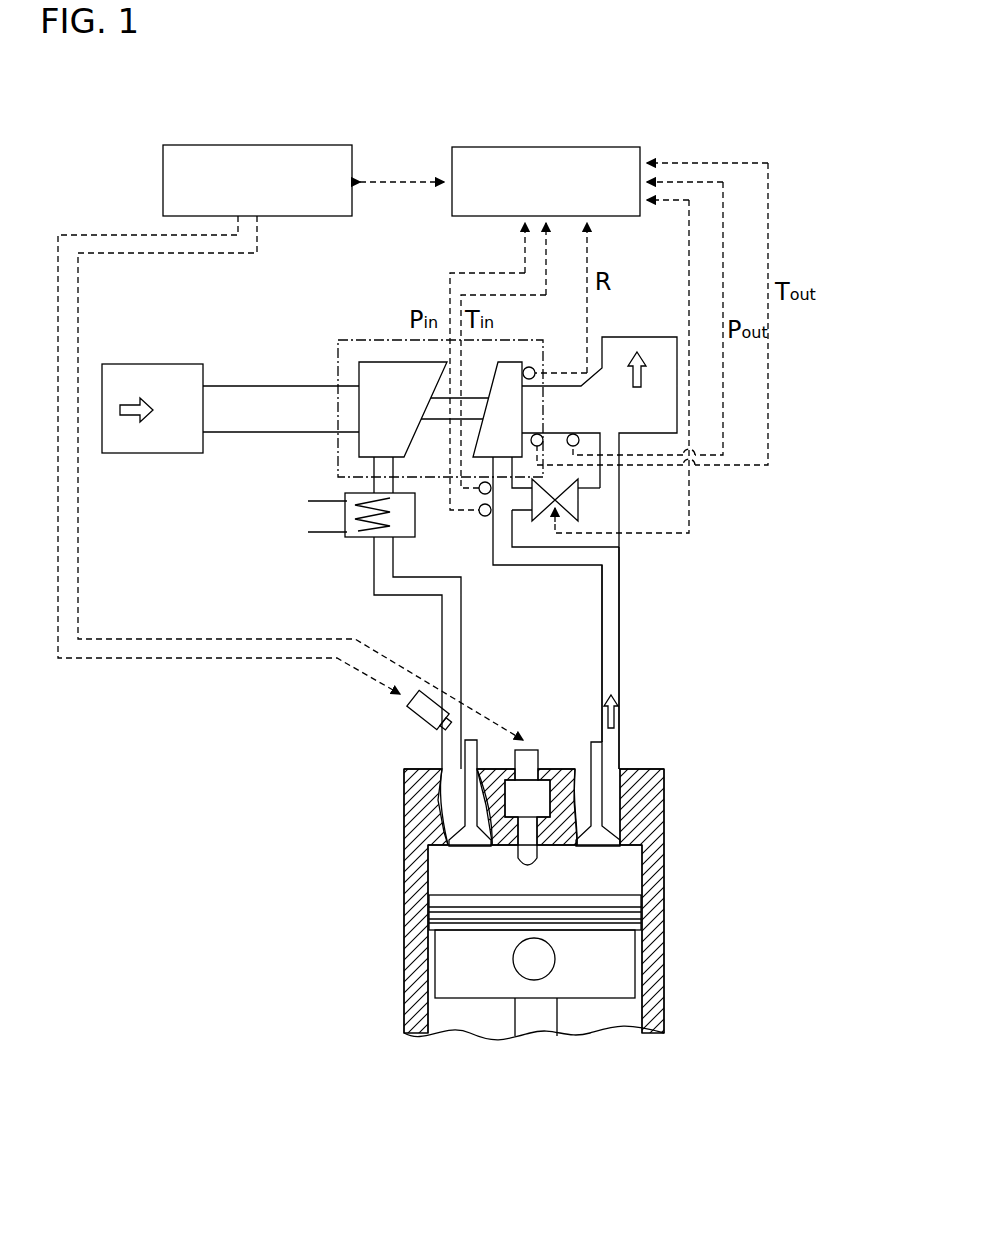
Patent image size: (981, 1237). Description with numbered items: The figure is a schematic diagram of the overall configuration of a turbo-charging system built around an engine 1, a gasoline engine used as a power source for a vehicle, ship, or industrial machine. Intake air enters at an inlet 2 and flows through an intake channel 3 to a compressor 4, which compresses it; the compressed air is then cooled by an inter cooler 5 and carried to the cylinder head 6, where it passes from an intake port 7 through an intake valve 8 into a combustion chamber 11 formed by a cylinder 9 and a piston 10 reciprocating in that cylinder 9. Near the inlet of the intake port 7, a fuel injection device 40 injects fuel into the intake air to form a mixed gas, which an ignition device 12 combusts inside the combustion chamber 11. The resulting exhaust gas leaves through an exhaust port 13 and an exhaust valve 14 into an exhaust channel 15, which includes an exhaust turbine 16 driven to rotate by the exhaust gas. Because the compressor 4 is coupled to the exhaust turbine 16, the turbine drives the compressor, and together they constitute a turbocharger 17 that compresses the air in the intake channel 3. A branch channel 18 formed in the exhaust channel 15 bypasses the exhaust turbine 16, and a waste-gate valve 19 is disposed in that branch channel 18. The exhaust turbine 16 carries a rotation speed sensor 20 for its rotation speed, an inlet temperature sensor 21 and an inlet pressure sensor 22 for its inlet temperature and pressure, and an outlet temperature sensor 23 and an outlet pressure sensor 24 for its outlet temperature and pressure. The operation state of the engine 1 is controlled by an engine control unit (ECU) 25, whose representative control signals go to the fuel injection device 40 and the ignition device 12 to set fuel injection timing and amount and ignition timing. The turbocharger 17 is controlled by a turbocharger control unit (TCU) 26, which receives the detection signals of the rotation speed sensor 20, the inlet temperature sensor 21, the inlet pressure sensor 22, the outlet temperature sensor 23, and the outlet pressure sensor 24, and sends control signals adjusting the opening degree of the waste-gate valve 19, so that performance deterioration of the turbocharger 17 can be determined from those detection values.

The engine 1 is at (707, 852).
The inlet 2 is at (166, 364).
The intake channel 3 is at (268, 433).
The compressor 4 is at (383, 362).
The inter cooler 5 is at (352, 538).
The cylinder head 6 is at (649, 769).
The intake port 7 is at (378, 749).
The intake valve 8 is at (445, 798).
The cylinder 9 is at (665, 933).
The piston 10 is at (615, 976).
The combustion chamber 11 is at (568, 884).
The ignition device 12 is at (540, 752).
The exhaust port 13 is at (656, 695).
The exhaust valve 14 is at (622, 798).
The exhaust channel 15 is at (602, 640).
The exhaust turbine 16 is at (511, 362).
The turbocharger 17 is at (348, 340).
The branch channel 18 is at (621, 487).
The waste-gate valve 19 is at (580, 512).
The rotation speed sensor 20 is at (533, 367).
The inlet temperature sensor 21 is at (481, 494).
The inlet pressure sensor 22 is at (482, 516).
The outlet temperature sensor 23 is at (543, 434).
The outlet pressure sensor 24 is at (579, 434).
The engine control unit (ECU) 25 is at (248, 145).
The turbocharger control unit (TCU) 26 is at (536, 147).
The fuel injection device 40 is at (418, 726).